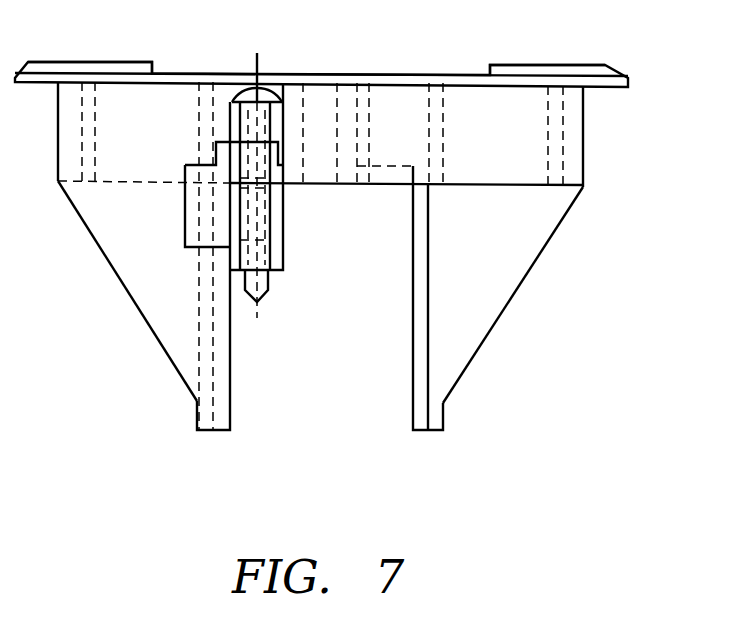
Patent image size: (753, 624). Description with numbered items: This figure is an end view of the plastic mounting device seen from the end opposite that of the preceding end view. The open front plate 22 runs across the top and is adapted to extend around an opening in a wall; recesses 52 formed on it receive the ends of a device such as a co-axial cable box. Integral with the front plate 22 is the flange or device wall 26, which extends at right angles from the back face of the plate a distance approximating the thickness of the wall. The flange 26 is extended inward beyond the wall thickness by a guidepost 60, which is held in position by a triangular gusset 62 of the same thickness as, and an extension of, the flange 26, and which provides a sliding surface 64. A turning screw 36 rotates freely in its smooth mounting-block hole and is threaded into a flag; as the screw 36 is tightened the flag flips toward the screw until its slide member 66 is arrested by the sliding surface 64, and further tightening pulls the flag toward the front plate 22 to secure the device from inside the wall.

The open front plate 22 is at (616, 68).
The flange or device wall 26 is at (585, 133).
The turning screw 36 is at (257, 80).
The recess 52 is at (489, 70).
The guidepost 60 is at (181, 293).
The triangular gusset 62 is at (117, 273).
The sliding surface 64 is at (216, 375).
The slide member 66 is at (184, 193).